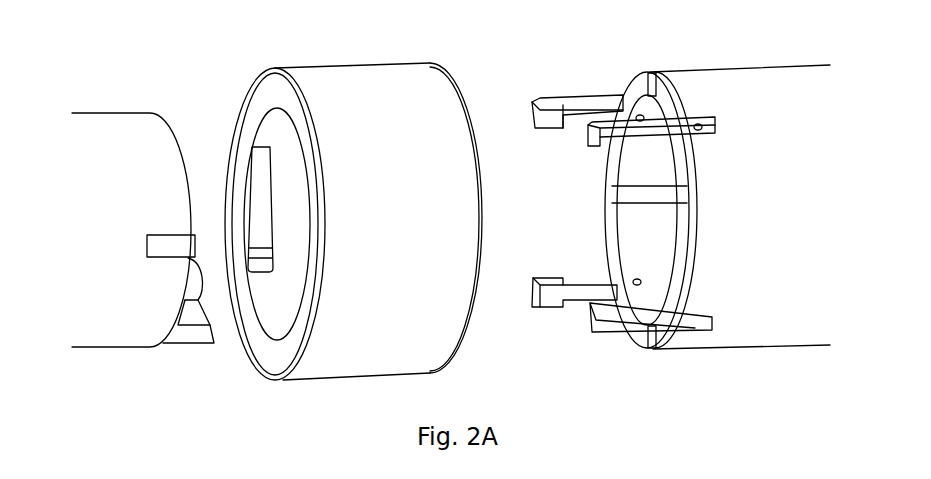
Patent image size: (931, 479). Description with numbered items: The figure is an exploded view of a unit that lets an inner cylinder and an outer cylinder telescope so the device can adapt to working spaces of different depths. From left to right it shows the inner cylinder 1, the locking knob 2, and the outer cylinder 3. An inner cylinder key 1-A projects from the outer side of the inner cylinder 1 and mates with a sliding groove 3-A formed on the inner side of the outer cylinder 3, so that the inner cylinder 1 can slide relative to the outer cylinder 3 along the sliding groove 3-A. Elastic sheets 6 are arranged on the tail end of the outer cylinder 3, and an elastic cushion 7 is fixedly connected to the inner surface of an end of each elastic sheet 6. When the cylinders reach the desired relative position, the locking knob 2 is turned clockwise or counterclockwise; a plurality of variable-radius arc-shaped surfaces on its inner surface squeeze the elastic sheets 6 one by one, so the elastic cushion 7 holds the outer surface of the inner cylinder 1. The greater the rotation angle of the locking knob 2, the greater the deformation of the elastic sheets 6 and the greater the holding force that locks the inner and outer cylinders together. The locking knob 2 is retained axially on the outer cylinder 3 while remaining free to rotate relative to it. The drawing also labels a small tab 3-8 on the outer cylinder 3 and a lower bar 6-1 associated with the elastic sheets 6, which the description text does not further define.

The inner cylinder 1 is at (97, 130).
The inner cylinder key 1-A is at (167, 247).
The locking knob 2 is at (333, 90).
The outer cylinder 3 is at (742, 90).
The tab 3-8 is at (653, 72).
The sliding groove 3-A is at (608, 205).
The elastic sheet 6 is at (580, 98).
The lower right bar 6-1 is at (698, 325).
The elastic cushion 7 is at (547, 287).